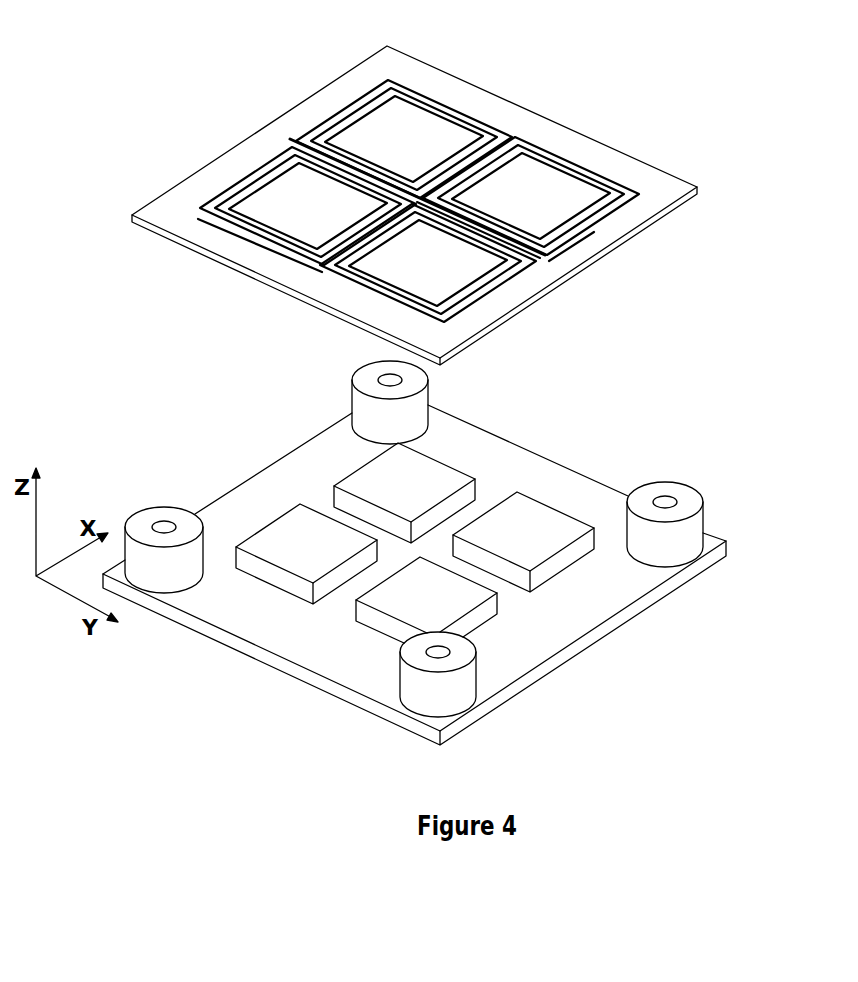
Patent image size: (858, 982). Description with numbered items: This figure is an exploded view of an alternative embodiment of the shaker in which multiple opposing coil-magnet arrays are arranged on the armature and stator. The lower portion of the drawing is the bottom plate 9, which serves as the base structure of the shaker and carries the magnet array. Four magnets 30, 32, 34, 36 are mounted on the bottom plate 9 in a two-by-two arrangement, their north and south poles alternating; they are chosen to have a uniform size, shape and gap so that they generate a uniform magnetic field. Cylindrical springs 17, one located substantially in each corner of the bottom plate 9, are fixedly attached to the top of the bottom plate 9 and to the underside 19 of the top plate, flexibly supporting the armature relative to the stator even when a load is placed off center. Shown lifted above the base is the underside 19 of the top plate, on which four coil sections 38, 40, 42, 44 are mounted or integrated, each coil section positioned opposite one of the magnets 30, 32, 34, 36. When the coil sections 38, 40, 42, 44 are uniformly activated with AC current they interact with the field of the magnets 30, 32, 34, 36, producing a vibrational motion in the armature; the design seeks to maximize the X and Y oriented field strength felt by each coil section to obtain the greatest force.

The bottom plate 9 is at (585, 607).
The spring 17 is at (692, 533).
The underside of top plate 19 is at (658, 187).
The magnet 30 is at (552, 527).
The magnet 32 is at (455, 597).
The magnet 34 is at (303, 560).
The magnet 36 is at (367, 480).
The coil section 38 is at (598, 225).
The coil section 40 is at (487, 288).
The coil section 42 is at (260, 167).
The coil section 44 is at (452, 107).